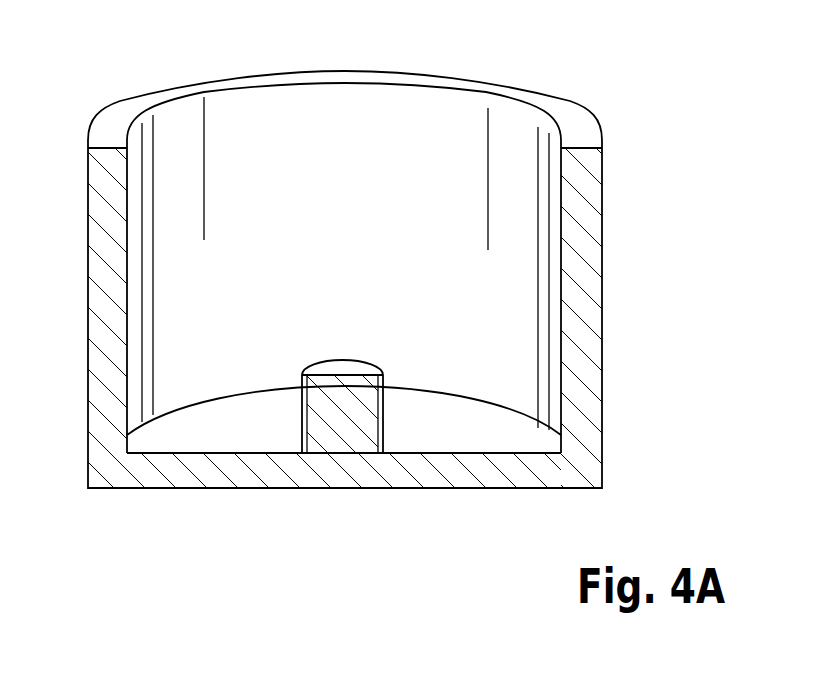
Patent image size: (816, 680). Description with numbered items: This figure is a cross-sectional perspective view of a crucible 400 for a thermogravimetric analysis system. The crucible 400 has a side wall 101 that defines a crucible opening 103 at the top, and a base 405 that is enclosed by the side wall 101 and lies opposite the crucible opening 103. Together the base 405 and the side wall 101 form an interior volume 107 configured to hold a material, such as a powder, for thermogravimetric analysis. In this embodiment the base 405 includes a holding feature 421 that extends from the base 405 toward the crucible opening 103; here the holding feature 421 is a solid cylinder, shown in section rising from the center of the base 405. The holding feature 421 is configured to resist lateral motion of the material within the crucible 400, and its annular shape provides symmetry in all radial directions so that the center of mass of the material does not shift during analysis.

The crucible 400 is at (82, 93).
The crucible opening 103 is at (446, 92).
The interior volume 107 is at (368, 213).
The side wall 101 is at (95, 235).
The holding feature 421 is at (370, 413).
The base 405 is at (217, 477).